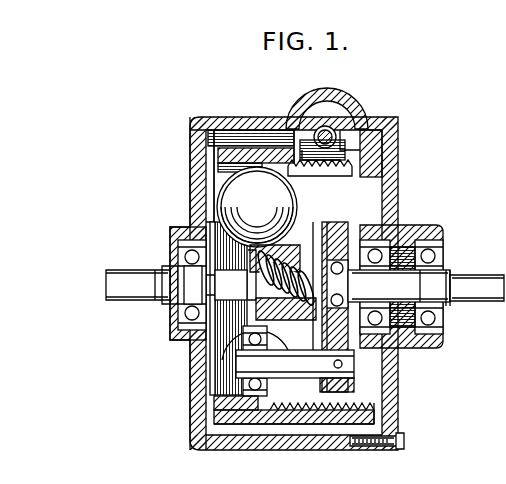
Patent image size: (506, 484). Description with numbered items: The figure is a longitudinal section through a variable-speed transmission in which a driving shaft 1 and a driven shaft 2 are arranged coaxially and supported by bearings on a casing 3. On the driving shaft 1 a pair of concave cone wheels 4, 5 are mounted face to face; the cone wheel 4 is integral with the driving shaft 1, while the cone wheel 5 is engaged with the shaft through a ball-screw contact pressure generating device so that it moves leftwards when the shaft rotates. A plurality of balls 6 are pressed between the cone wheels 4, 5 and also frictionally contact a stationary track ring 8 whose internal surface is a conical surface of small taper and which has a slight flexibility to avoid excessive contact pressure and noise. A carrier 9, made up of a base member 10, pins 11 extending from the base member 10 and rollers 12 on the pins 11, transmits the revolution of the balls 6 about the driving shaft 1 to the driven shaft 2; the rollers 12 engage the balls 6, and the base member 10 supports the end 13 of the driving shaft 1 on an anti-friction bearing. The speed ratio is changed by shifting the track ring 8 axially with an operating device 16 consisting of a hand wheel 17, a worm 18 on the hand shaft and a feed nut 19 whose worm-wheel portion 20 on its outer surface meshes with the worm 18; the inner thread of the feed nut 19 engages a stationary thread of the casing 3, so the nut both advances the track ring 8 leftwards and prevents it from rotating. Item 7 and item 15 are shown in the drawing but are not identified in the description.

The driving shaft 1 is at (119, 280).
The driven shaft 2 is at (482, 285).
The casing 3 is at (190, 415).
The cone wheel 4 is at (226, 356).
The cone wheel 5 is at (300, 245).
The balls 6 is at (238, 203).
The block 7 is at (338, 240).
The track ring 8 is at (237, 130).
The carrier 9 is at (285, 414).
The base member 10 is at (378, 232).
The pins 11 is at (300, 378).
The rollers 12 is at (245, 390).
The end of driving shaft 13 is at (358, 284).
The cavity wall 15 is at (216, 175).
The operating device 16 is at (352, 106).
The hand wheel 17 is at (372, 128).
The worm 18 is at (327, 126).
The feed nut 19 is at (323, 160).
The worm-wheel portion 20 is at (292, 150).